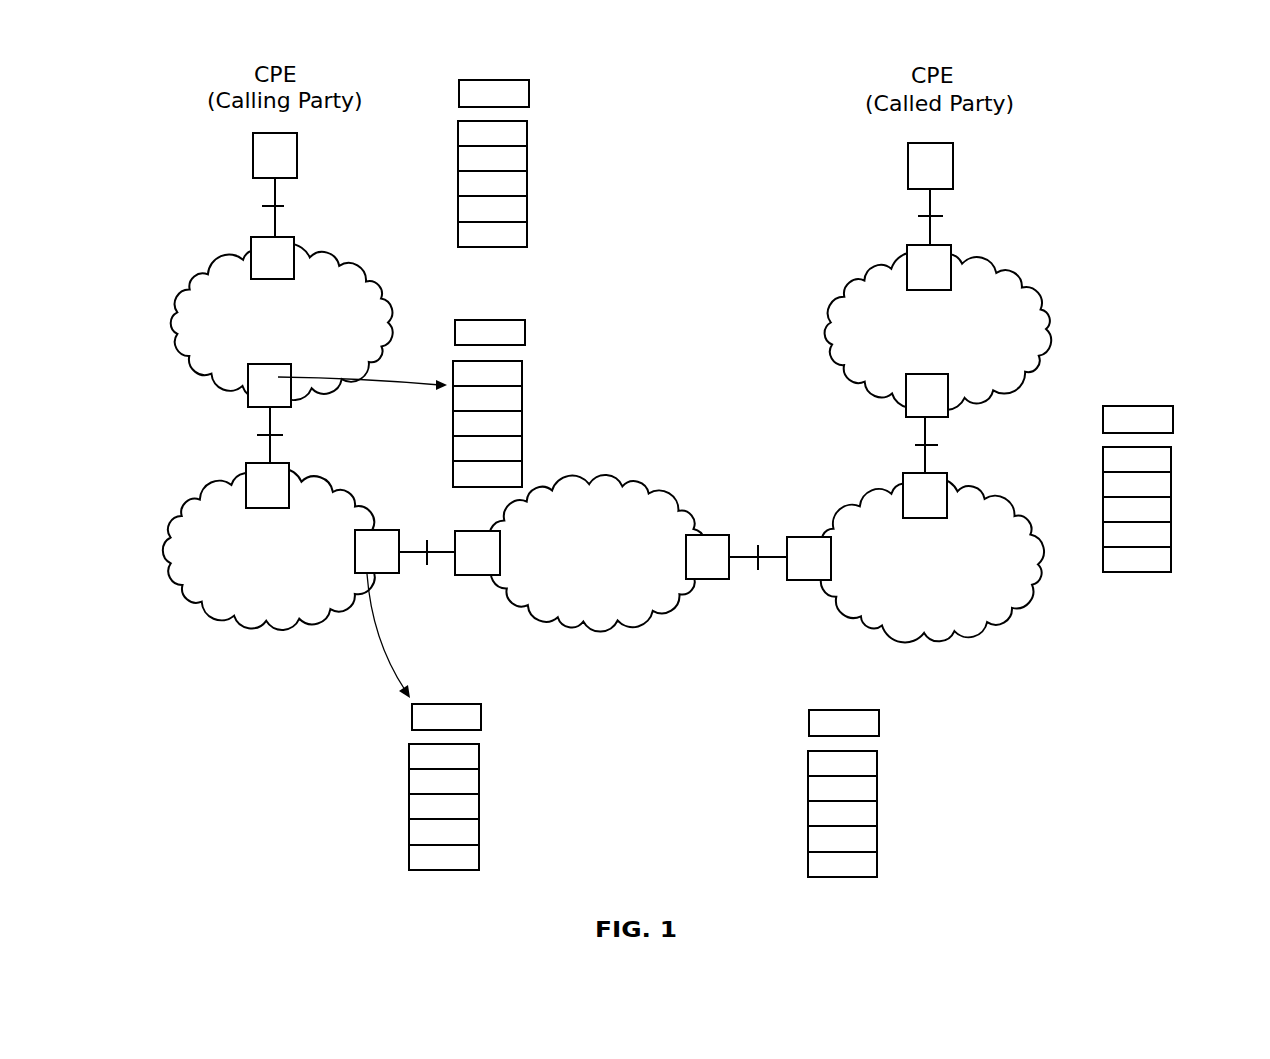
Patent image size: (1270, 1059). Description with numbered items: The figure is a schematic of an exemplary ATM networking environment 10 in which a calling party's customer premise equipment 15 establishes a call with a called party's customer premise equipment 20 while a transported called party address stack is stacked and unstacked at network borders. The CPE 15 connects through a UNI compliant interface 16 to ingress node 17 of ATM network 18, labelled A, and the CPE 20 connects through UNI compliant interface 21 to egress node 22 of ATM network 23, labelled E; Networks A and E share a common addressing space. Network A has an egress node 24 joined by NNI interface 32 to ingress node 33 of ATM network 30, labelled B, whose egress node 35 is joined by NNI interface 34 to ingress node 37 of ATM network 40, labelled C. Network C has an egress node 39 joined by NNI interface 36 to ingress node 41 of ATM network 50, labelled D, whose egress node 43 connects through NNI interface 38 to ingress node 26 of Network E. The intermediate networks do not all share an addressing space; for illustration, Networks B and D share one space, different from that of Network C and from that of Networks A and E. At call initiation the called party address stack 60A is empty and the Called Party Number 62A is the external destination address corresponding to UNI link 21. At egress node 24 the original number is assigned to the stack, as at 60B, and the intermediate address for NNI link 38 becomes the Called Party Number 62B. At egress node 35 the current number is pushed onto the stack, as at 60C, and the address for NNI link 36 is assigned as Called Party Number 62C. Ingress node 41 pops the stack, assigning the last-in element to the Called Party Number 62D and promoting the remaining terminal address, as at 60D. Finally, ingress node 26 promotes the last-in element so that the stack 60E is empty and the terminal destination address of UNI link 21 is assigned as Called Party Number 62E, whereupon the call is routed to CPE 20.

The ATM networking environment 10 is at (1150, 201).
The customer premise equipment 15 is at (253, 148).
The UNI compliant interface 16 is at (284, 206).
The ingress node 17 is at (294, 240).
The ATM network 18 is at (355, 297).
The customer premise equipment 20 is at (950, 152).
The UNI compliant interface 21 is at (917, 218).
The egress node 22 is at (907, 248).
The ATM network 23 is at (1018, 297).
The egress node 24 is at (291, 410).
The ingress node 26 is at (906, 420).
The ATM network 30 is at (310, 603).
The NNI interface 32 is at (283, 437).
The ingress node 33 is at (246, 474).
The NNI interface 34 is at (427, 545).
The egress node 35 is at (392, 575).
The NNI interface 36 is at (758, 550).
The ingress node 37 is at (484, 576).
The NNI interface 38 is at (918, 447).
The egress node 39 is at (710, 580).
The ATM network 40 is at (600, 612).
The ingress node 41 is at (812, 580).
The egress node 43 is at (947, 482).
The ATM network 50 is at (943, 610).
The called party address stack 60A is at (527, 222).
The called party address stack 60B is at (522, 462).
The called party address stack 60C is at (479, 784).
The called party address stack 60D is at (877, 790).
The called party address stack 60E is at (1171, 537).
The Called Party Number 62A is at (529, 82).
The Called Party Number 62B is at (525, 345).
The Called Party Number 62C is at (481, 730).
The Called Party Number 62D is at (879, 736).
The Called Party Number 62E is at (1173, 408).